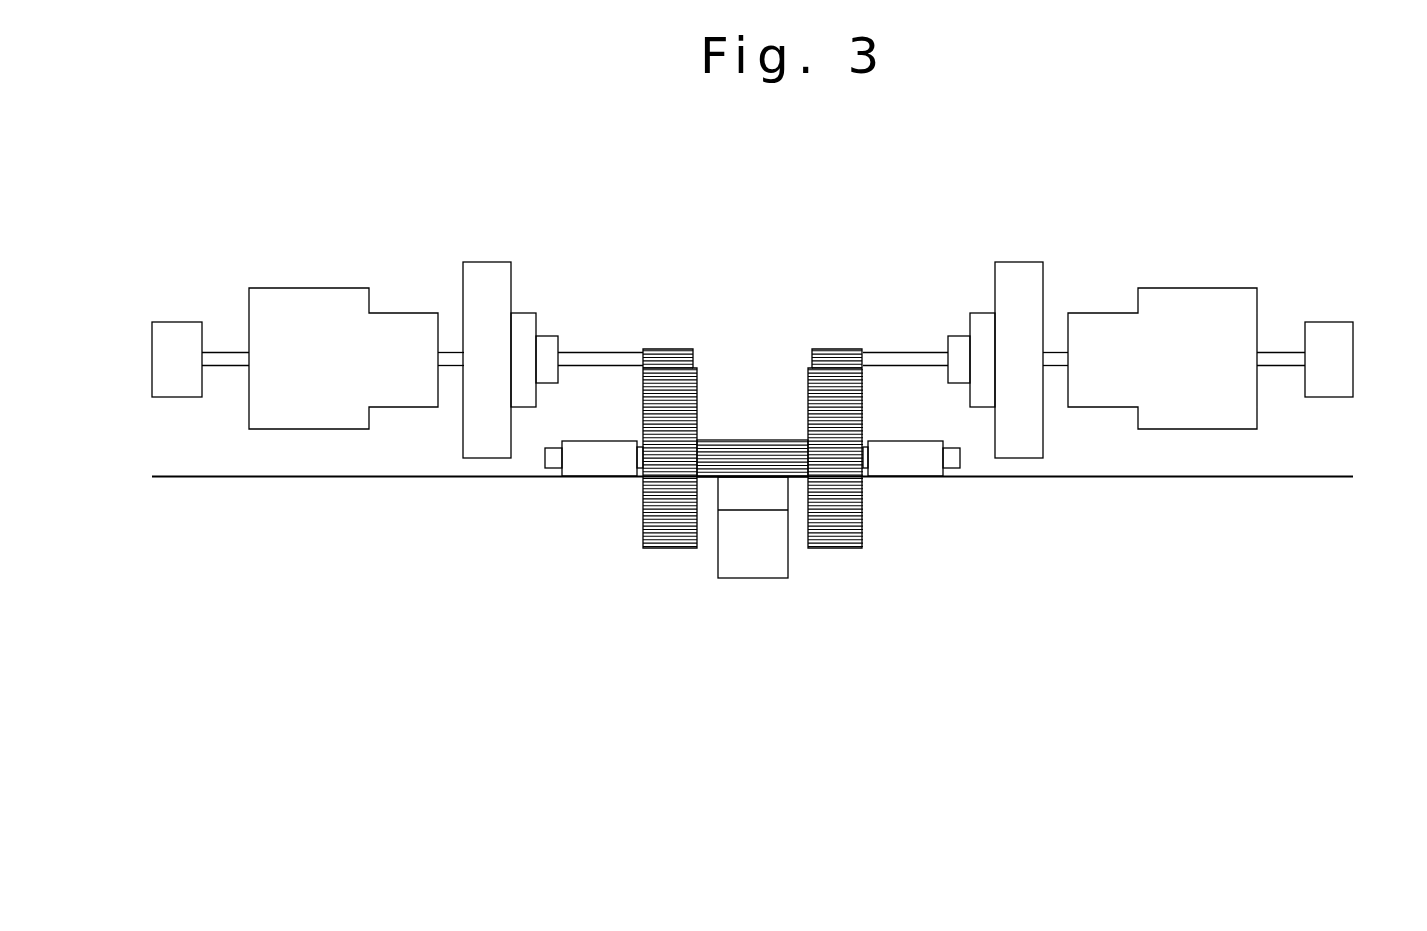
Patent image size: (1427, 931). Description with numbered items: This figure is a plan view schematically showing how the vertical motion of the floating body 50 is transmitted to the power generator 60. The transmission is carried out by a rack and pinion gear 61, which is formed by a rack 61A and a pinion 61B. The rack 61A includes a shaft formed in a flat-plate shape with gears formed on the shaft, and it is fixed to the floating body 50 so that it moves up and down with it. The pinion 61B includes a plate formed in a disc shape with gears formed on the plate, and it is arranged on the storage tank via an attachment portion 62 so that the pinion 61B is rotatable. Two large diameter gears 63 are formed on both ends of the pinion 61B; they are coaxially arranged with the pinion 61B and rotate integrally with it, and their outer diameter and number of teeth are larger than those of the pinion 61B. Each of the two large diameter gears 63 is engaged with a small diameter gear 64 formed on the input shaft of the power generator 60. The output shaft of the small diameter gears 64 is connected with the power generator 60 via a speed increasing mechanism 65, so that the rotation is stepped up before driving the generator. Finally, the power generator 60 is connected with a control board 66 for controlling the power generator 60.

The floating body 50 is at (1200, 550).
The power generator 60 is at (309, 308).
The rack and pinion gear 61 is at (750, 440).
The rack 61A is at (753, 493).
The pinion 61B is at (753, 448).
The attachment portion 62 is at (603, 460).
The large diameter gear 63 is at (672, 533).
The small diameter gear 64 is at (663, 355).
The speed increasing mechanism 65 is at (488, 285).
The control board 66 is at (177, 335).